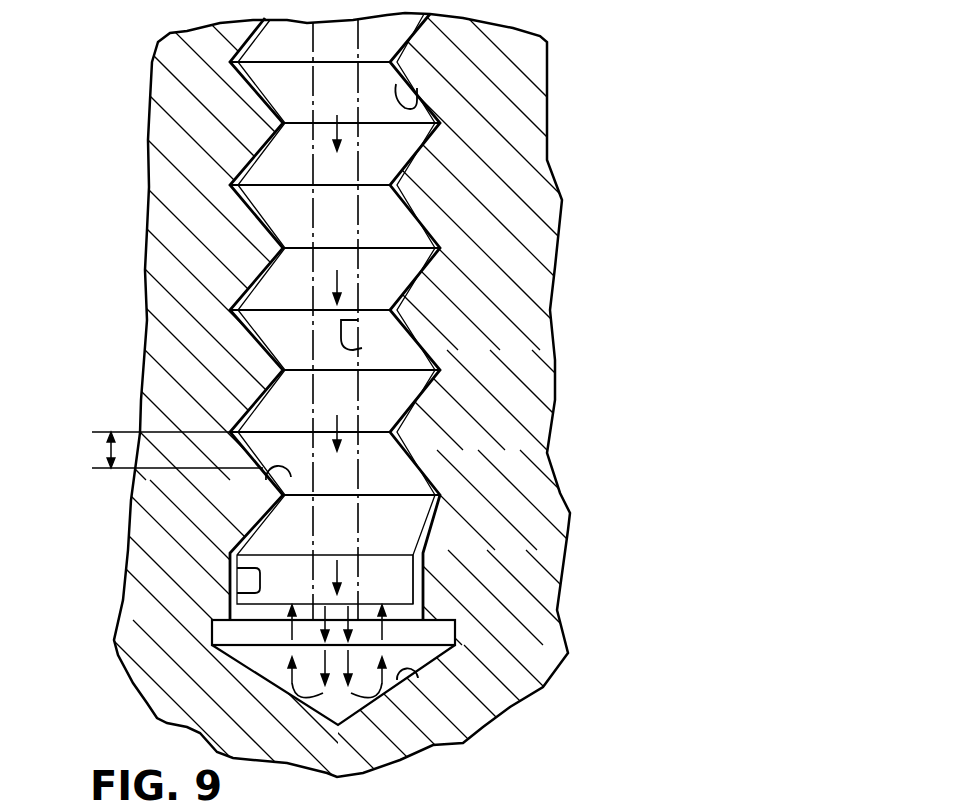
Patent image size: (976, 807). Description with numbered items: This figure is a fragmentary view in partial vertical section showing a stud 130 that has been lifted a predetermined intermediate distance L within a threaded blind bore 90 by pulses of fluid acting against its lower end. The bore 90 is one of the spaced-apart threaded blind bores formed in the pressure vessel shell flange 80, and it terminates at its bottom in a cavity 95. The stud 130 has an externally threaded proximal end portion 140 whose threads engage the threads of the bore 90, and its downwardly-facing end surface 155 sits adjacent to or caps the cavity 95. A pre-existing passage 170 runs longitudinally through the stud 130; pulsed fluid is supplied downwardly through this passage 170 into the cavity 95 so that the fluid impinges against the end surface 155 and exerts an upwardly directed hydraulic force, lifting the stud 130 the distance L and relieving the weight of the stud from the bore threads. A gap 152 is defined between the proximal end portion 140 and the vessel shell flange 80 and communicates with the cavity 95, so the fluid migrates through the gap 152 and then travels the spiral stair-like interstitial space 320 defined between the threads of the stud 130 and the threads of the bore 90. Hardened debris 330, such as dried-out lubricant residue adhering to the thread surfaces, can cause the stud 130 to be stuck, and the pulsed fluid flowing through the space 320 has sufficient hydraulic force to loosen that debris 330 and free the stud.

The pressure vessel shell flange 80 is at (528, 240).
The threaded blind bore 90 is at (420, 103).
The stud 130 is at (383, 117).
The proximal end portion 140 is at (403, 383).
The passage 170 is at (360, 348).
The interstitial space 320 is at (275, 490).
The predetermined intermediate distance L is at (168, 450).
The gap 152 is at (233, 590).
The end surface 155 is at (393, 606).
The debris 330 is at (428, 803).
The cavity 95 is at (403, 665).